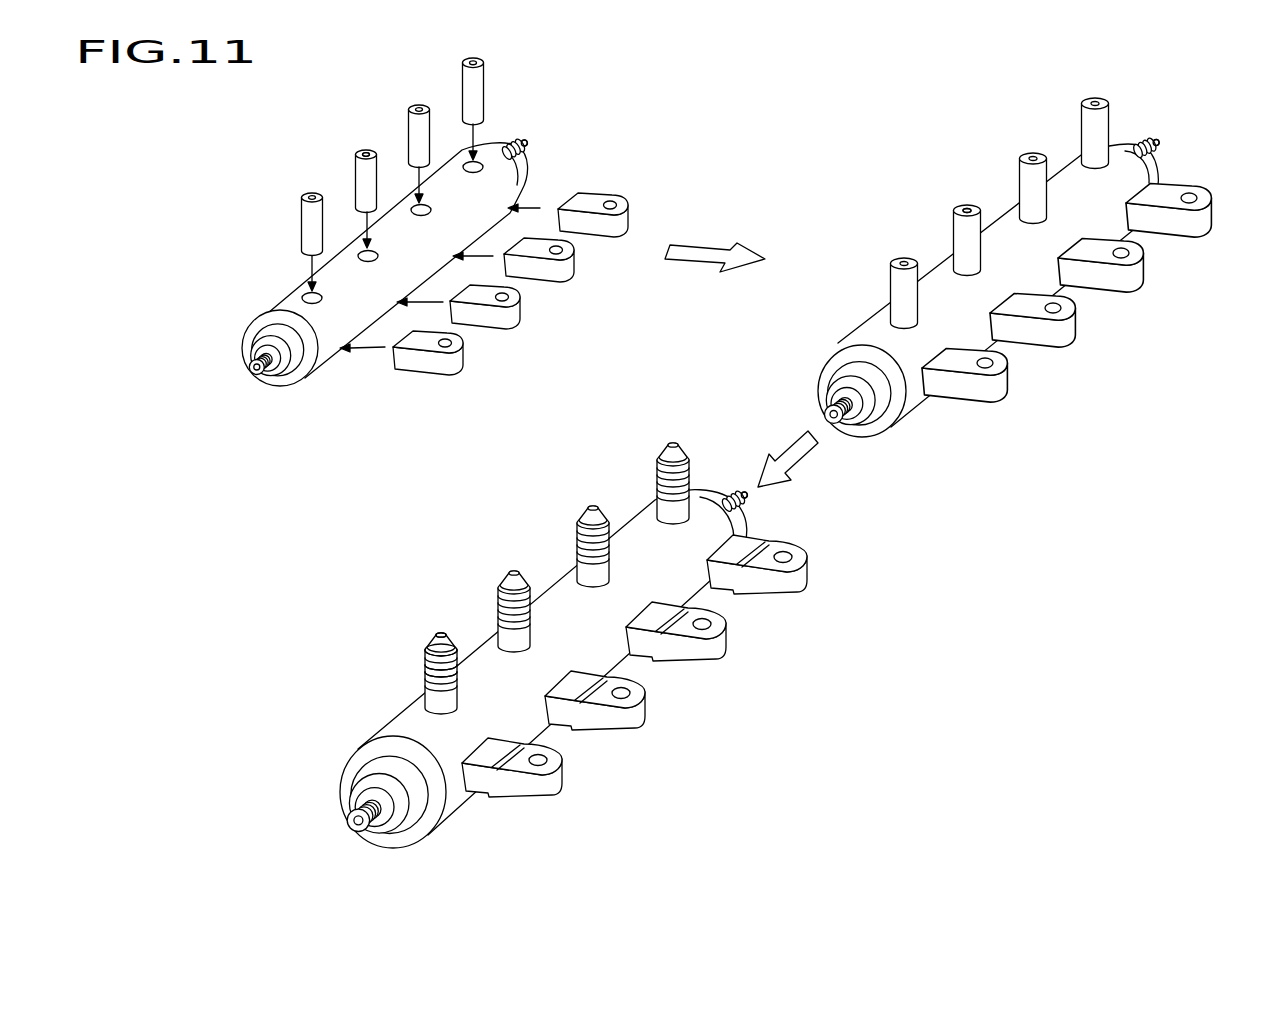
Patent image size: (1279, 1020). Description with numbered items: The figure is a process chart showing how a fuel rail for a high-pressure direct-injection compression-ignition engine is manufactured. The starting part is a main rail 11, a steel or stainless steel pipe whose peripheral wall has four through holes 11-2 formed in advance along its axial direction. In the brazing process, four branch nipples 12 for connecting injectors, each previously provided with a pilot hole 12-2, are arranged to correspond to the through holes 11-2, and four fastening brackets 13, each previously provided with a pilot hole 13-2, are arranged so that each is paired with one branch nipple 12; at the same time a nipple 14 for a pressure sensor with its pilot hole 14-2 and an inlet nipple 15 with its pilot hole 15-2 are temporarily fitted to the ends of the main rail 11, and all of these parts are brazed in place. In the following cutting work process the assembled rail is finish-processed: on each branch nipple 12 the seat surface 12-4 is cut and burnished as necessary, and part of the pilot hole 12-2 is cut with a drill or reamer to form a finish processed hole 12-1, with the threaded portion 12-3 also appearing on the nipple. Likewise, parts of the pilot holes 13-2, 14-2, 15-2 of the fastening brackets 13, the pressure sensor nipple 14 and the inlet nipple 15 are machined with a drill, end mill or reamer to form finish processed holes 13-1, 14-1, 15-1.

The main rail 11 is at (285, 298).
The through hole 11-2 is at (357, 253).
The branch nipple for connecting injectors 12 is at (674, 386).
The finish processed hole 12-1 is at (439, 632).
The pilot hole 12-2 is at (361, 150).
The pin thread 12-3 is at (425, 666).
The seat surface 12-4 is at (429, 641).
The fastening bracket 13 is at (802, 524).
The finish processed hole 13-1 is at (552, 754).
The pilot hole 13-2 is at (451, 342).
The nipple for a pressure sensor 14 is at (542, 608).
The finish processed hole 14-1 is at (350, 823).
The pilot hole 14-2 is at (250, 368).
The inlet nipple 15 is at (878, 317).
The finish processed hole 15-1 is at (750, 492).
The pilot hole 15-2 is at (524, 142).